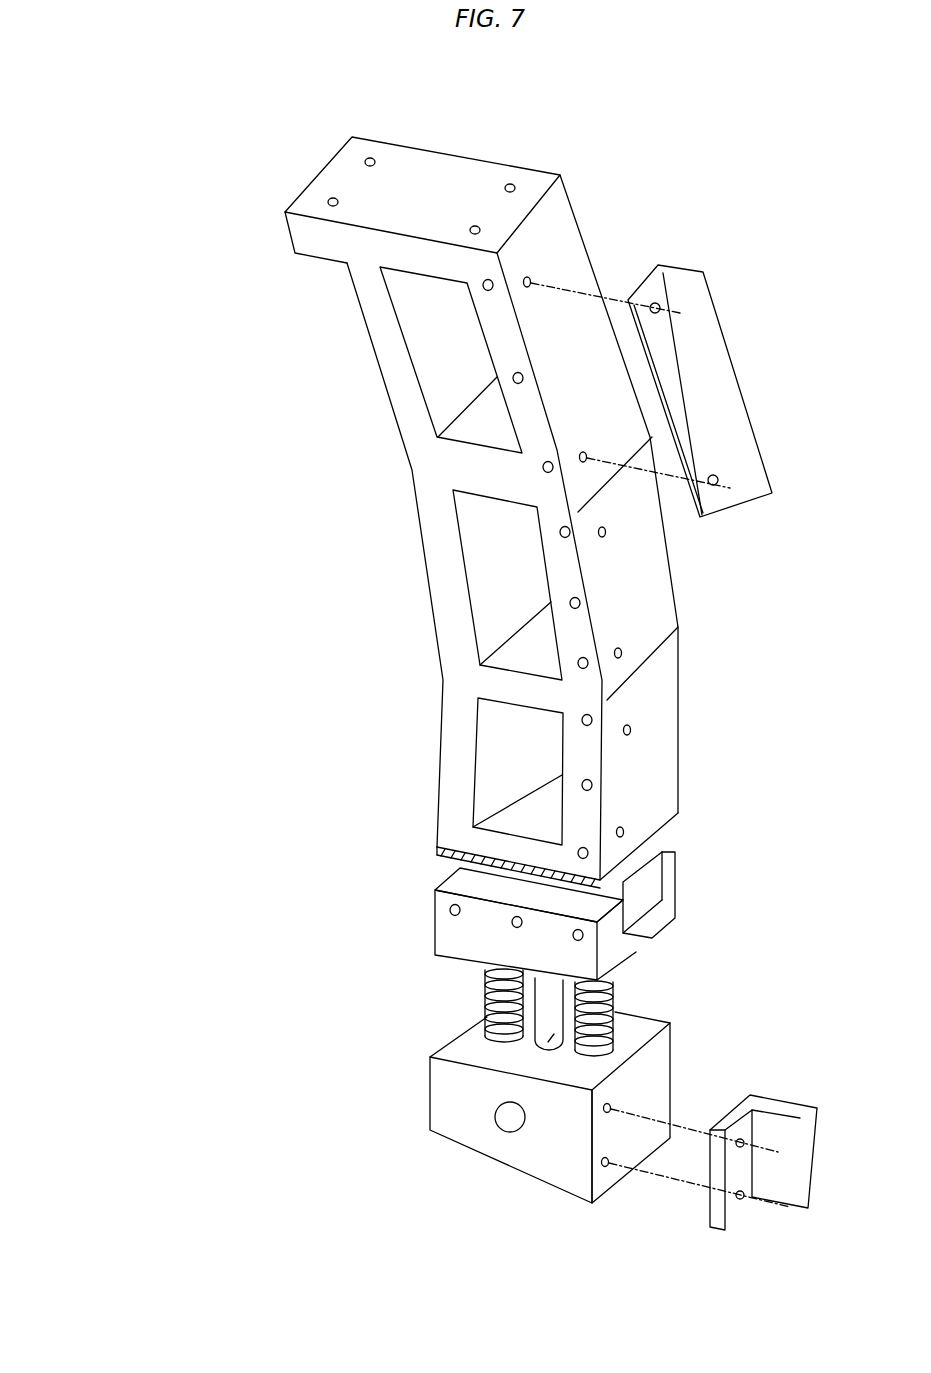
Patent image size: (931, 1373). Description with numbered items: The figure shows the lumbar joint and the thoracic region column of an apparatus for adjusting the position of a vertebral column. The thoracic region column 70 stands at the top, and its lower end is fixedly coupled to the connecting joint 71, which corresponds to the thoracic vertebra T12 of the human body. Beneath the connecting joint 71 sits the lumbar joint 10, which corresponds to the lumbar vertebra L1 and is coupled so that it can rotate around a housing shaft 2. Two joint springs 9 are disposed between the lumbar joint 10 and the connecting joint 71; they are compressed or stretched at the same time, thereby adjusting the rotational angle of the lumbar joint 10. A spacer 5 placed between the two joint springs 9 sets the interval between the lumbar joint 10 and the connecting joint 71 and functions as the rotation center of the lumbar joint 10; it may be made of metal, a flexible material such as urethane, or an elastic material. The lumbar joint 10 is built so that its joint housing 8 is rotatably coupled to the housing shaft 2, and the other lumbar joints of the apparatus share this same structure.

The thoracic region column 70 is at (232, 625).
The connecting joint 71 is at (455, 930).
The joint springs 9 is at (485, 983).
The lumbar joint 10 is at (365, 1075).
The spacer 5 is at (535, 1052).
The joint housing 8 is at (565, 1163).
The housing shaft 2 is at (510, 1118).